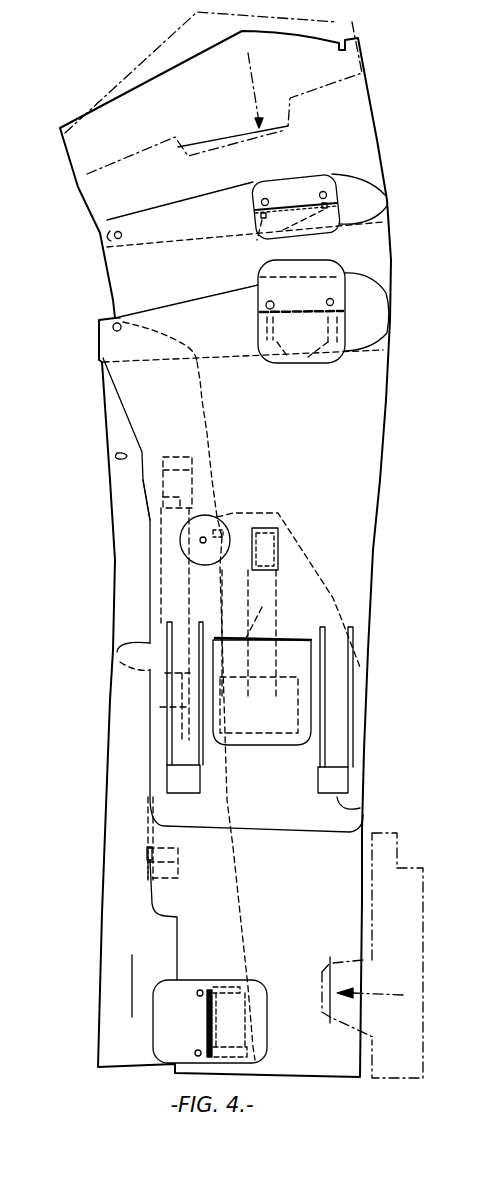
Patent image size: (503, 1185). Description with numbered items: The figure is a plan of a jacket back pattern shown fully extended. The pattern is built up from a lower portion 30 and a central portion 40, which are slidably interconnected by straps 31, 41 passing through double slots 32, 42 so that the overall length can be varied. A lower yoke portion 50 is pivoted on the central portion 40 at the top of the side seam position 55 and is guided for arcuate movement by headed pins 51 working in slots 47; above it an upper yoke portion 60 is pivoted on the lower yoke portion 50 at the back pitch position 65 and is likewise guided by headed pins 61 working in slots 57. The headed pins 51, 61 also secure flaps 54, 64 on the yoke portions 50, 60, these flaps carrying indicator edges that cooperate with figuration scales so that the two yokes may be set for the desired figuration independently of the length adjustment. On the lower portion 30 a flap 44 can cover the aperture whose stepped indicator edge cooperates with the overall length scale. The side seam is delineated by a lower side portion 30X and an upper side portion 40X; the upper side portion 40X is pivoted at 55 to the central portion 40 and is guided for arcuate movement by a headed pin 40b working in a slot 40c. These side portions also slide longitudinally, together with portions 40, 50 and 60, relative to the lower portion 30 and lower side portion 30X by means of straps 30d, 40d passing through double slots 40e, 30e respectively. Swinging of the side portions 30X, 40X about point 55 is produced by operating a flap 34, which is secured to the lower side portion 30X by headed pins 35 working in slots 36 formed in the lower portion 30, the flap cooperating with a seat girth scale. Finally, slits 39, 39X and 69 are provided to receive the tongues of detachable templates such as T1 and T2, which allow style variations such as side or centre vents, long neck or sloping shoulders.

The detachable template T2 is at (143, 72).
The slit 69 is at (213, 137).
The upper yoke portion 60 is at (160, 191).
The headed pins 61 is at (323, 191).
The flap 64 is at (340, 223).
The back pitch position 65 is at (110, 238).
The slots 57 is at (262, 238).
The headed pins 51 is at (331, 298).
The lower yoke portion 50 is at (174, 293).
The top of the side seam position 55 is at (108, 330).
The flap 54 is at (390, 331).
The slots 47 is at (288, 365).
The upper side portion 40X is at (212, 442).
The central portion 40 is at (303, 441).
The double slot 40e is at (187, 503).
The slot 40c is at (218, 513).
The headed pin 40b is at (200, 540).
The double slots 42 is at (270, 567).
The strap 30d is at (167, 581).
The straps 31 is at (263, 607).
The lower portion 30 is at (333, 600).
The straps 41 is at (173, 688).
The flap 44 is at (265, 745).
The double slots 32 is at (363, 797).
The strap 40d is at (155, 838).
The double slot 30e is at (160, 860).
The lower side portion 30X is at (237, 890).
The slit 39X is at (130, 990).
The headed pins 35 is at (200, 988).
The slots 36 is at (227, 980).
The flap 34 is at (262, 1011).
The slit 39 is at (330, 978).
The detachable template T1 is at (403, 877).